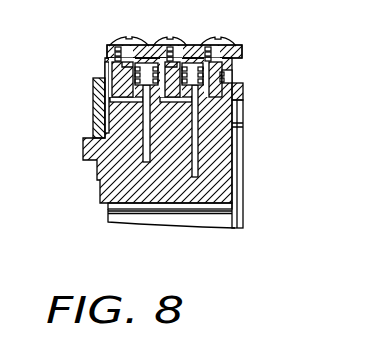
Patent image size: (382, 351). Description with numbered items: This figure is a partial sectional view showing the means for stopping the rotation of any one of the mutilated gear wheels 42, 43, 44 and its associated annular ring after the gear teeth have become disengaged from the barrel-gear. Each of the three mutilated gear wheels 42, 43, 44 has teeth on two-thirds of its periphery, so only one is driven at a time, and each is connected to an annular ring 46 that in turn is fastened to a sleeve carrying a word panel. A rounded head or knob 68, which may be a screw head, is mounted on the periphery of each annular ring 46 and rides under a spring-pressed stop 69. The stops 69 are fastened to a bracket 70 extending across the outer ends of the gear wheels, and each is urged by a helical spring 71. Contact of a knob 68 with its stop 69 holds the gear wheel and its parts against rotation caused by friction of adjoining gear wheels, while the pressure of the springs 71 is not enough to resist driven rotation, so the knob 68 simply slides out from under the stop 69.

The mutilated gear wheel 42 is at (243, 89).
The mutilated gear wheel 43 is at (193, 90).
The mutilated gear wheel 44 is at (105, 117).
The annular ring 46 is at (217, 167).
The rounded head 68 is at (243, 97).
The spring-pressed stop 69 is at (238, 58).
The bracket 70 is at (143, 43).
The helical spring 71 is at (114, 62).